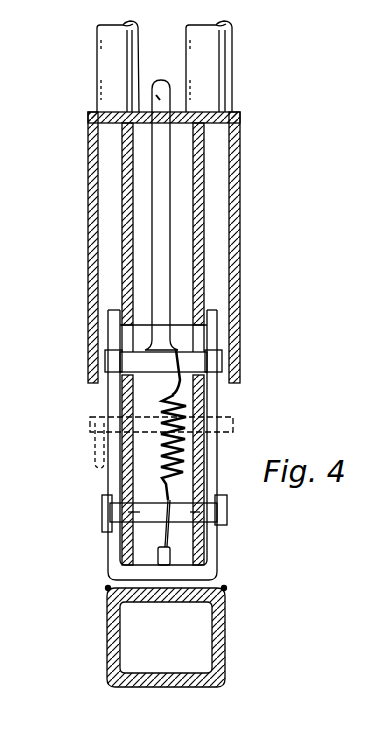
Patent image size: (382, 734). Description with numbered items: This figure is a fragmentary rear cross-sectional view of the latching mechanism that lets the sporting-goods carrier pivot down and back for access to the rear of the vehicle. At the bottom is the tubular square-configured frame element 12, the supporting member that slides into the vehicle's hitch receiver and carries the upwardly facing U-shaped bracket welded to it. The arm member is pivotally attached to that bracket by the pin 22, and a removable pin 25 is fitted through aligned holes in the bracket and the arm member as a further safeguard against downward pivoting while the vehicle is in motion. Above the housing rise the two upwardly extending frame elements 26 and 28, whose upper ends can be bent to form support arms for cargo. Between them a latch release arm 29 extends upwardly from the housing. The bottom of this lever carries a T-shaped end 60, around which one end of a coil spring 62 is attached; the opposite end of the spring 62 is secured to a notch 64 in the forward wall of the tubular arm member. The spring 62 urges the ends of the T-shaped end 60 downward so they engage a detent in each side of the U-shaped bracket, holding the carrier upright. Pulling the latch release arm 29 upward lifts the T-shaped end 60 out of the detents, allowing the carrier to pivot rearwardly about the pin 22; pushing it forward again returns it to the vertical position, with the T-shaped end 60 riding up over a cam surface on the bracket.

The tubular square-configured frame element 12 is at (225, 634).
The pin 22 is at (228, 515).
The removable pin 25 is at (236, 418).
The frame element 26 is at (222, 62).
The frame element 28 is at (100, 62).
The latch release arm 29 is at (165, 102).
The T-shaped end 60 is at (130, 358).
The coil spring 62 is at (170, 452).
The notch 64 is at (172, 558).